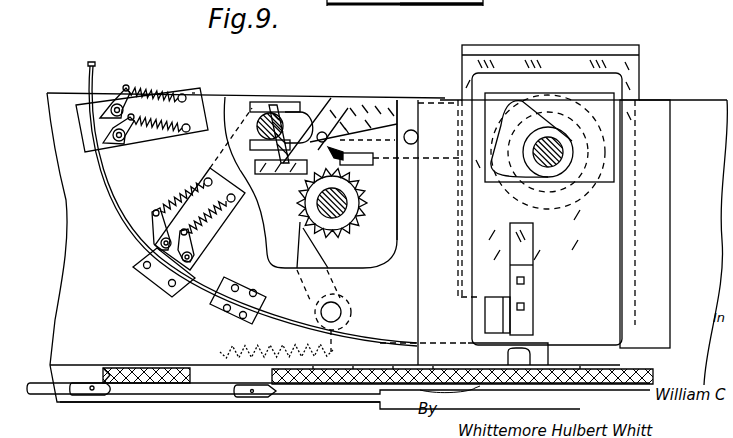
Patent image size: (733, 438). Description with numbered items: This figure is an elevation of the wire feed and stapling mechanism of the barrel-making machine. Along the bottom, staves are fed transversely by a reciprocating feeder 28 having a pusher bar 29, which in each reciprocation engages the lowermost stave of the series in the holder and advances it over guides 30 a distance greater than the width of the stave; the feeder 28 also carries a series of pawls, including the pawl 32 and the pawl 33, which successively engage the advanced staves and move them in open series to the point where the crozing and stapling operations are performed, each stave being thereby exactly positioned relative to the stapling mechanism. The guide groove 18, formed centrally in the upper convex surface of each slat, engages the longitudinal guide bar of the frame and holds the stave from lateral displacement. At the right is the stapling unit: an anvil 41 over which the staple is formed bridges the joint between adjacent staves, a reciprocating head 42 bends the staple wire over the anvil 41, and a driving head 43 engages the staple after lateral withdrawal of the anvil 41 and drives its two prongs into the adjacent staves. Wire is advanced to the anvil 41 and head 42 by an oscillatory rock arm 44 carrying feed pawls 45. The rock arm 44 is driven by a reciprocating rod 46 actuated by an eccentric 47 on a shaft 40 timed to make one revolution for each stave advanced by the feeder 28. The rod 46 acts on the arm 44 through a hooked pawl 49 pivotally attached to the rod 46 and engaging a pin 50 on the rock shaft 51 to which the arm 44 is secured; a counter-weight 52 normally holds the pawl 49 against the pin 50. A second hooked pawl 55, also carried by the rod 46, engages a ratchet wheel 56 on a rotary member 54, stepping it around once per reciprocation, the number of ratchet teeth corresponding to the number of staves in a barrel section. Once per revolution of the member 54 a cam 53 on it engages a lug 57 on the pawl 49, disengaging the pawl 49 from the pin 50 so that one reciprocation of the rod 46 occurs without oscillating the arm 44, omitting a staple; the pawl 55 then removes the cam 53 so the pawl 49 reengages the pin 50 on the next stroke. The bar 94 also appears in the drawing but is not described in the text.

The guide groove 18 is at (147, 371).
The reciprocating feeder 28 is at (50, 395).
The pusher bar 29 is at (380, 0).
The guides 30 is at (178, 402).
The pawl 32 is at (84, 395).
The pawl 33 is at (243, 397).
The shaft 40 is at (562, 150).
The anvil 41 is at (530, 357).
The reciprocating head 42 is at (548, 279).
The driving head 43 is at (532, 275).
The oscillatory rock arm 44 is at (207, 170).
The feed pawls 45 is at (155, 231).
The reciprocating rod 46 is at (300, 107).
The eccentric 47 is at (645, 88).
The hooked pawl 49 is at (276, 176).
The pin 50 is at (288, 110).
The rock shaft 51 is at (257, 118).
The counter-weight 52 is at (363, 108).
The cam 53 is at (356, 160).
The rotary member 54 is at (347, 202).
The hooked pawl 55 is at (317, 115).
The ratchet wheel 56 is at (359, 220).
The lug 57 is at (373, 158).
The bar 94 is at (441, 19).